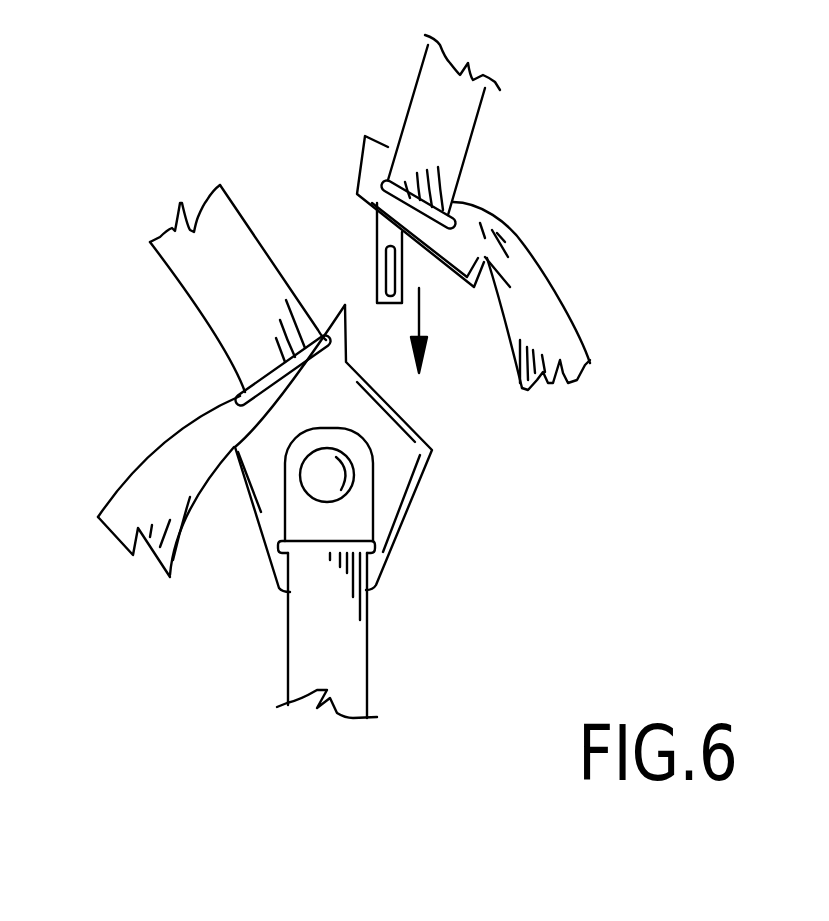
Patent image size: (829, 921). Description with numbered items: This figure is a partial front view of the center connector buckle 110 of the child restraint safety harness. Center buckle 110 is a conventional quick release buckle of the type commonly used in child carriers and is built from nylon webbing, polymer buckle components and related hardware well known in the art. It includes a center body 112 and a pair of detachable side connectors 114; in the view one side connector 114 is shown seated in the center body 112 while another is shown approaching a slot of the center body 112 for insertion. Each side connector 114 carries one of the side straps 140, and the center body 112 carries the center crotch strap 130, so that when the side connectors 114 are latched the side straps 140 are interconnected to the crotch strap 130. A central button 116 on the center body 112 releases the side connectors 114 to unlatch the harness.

The center connector buckle 110 is at (270, 537).
The center body 112 is at (388, 518).
The side connector 114 is at (360, 160).
The central button 116 is at (326, 478).
The crotch strap 130 is at (370, 653).
The side strap 140 is at (552, 283).